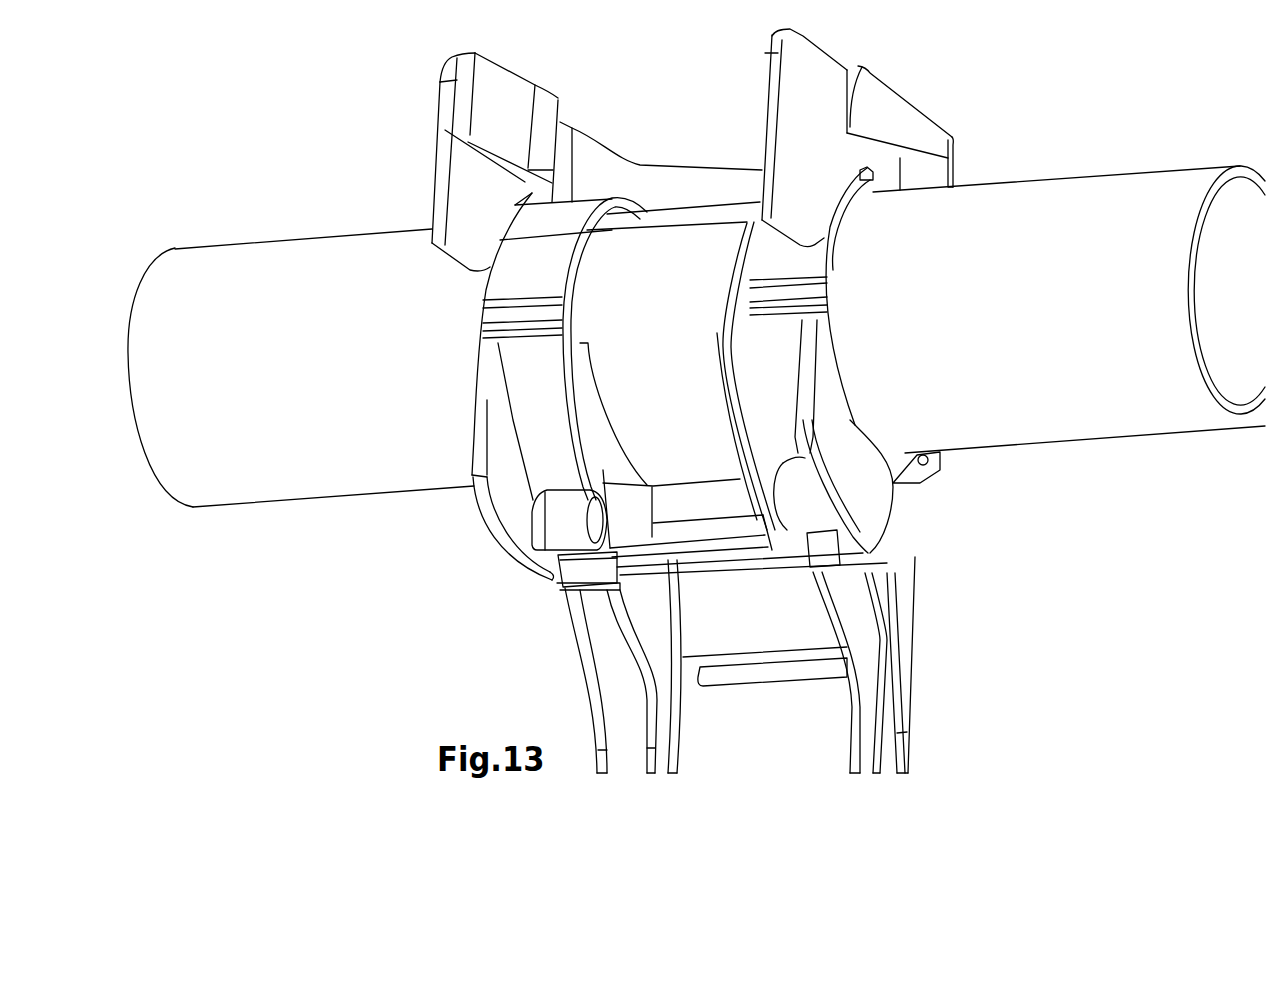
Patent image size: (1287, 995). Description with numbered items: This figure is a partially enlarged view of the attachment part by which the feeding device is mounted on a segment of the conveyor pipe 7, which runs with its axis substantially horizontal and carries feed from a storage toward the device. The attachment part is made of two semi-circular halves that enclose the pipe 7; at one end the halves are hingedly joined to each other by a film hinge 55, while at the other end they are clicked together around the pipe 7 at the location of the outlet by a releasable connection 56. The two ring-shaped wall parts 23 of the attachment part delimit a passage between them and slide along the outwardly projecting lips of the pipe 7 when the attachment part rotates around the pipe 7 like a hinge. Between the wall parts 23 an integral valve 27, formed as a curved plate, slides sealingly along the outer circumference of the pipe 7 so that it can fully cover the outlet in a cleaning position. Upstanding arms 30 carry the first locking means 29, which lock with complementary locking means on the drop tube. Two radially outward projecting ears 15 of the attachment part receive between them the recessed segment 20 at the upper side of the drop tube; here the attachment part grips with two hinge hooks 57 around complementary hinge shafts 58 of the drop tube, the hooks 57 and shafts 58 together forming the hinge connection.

The conveyor pipe 7 is at (1148, 405).
The ears 15 is at (497, 518).
The recessed segment 20 is at (895, 740).
The ring-shaped wall parts 23 is at (532, 382).
The valve 27 is at (683, 280).
The first locking means 29 is at (542, 117).
The arms 30 is at (473, 187).
The film hinge 55 is at (497, 318).
The releasable connection 56 is at (937, 462).
The hinge hooks 57 is at (560, 523).
The hinge shafts 58 is at (603, 537).